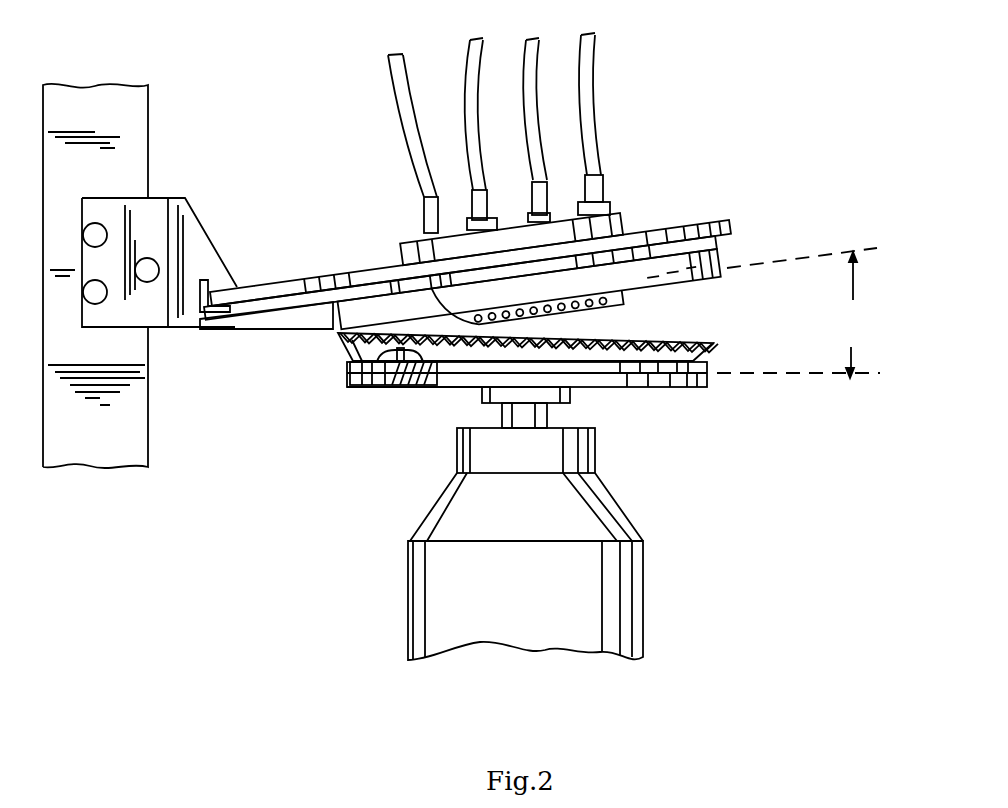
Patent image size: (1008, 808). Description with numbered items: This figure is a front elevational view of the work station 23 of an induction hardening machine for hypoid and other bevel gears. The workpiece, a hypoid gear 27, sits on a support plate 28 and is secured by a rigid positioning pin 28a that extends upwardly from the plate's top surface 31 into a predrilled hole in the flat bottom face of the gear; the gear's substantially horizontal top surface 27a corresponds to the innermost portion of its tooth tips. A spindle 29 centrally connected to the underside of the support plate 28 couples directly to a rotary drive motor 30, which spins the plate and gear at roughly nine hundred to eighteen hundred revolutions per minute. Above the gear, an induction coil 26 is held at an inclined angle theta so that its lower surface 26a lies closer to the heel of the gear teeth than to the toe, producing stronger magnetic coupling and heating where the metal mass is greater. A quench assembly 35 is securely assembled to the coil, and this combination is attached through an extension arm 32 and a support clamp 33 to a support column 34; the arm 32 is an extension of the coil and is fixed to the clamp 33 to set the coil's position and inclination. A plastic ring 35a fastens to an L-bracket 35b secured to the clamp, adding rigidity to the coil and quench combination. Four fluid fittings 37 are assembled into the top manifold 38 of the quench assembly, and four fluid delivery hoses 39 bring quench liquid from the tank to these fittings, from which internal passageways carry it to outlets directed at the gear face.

The work station 23 is at (690, 100).
The induction coil 26 is at (768, 240).
The lower surface of the coil 26a is at (680, 285).
The hypoid gear 27 is at (545, 327).
The top surface of the gear 27a is at (598, 332).
The support plate 28 is at (527, 400).
The positioning pin 28a is at (437, 388).
The spindle 29 is at (548, 420).
The rotary drive motor 30 is at (643, 572).
The top surface of the support plate 31 is at (350, 368).
The extension arm 32 is at (274, 322).
The support clamp 33 is at (158, 210).
The support column 34 is at (145, 124).
The quench assembly 35 is at (643, 218).
The plastic ring 35a is at (250, 298).
The L-bracket 35b is at (230, 330).
The fluid fittings 37 is at (424, 218).
The top manifold 38 is at (402, 258).
The fluid delivery hoses 39 is at (397, 55).